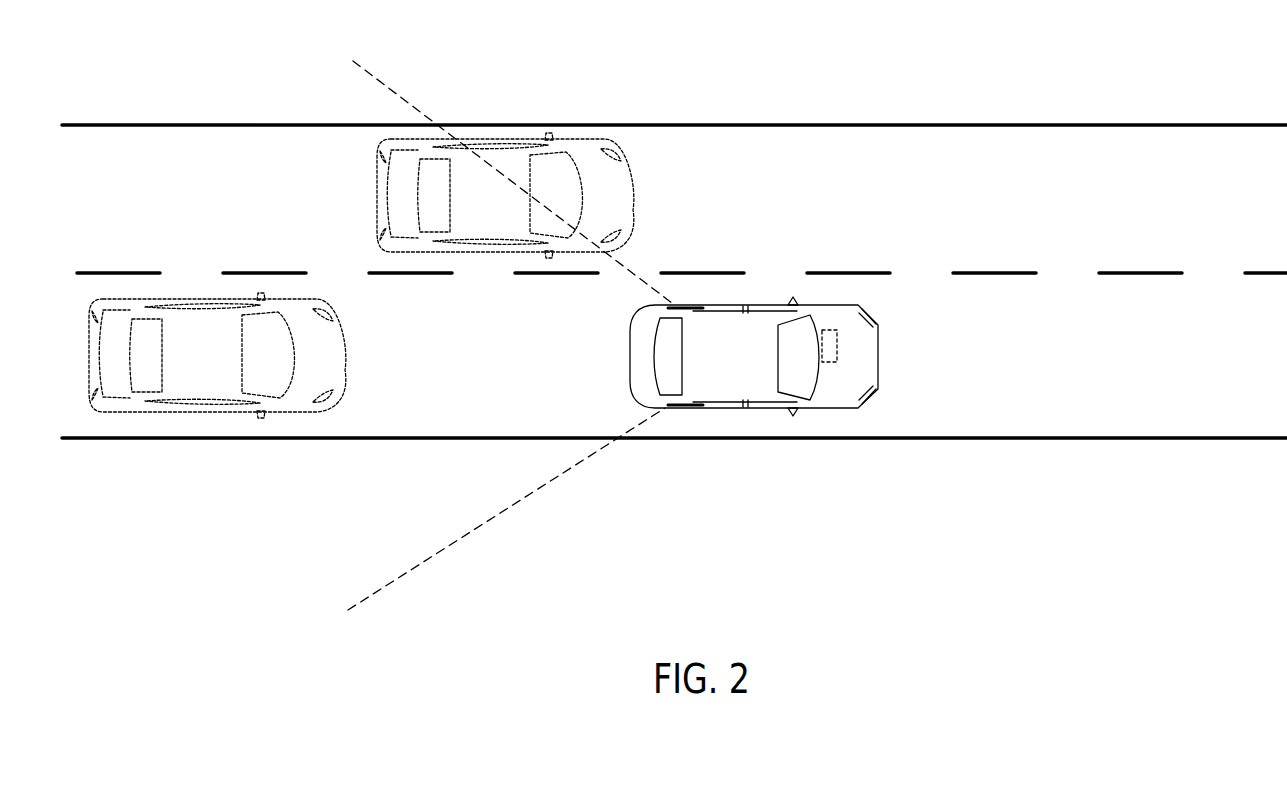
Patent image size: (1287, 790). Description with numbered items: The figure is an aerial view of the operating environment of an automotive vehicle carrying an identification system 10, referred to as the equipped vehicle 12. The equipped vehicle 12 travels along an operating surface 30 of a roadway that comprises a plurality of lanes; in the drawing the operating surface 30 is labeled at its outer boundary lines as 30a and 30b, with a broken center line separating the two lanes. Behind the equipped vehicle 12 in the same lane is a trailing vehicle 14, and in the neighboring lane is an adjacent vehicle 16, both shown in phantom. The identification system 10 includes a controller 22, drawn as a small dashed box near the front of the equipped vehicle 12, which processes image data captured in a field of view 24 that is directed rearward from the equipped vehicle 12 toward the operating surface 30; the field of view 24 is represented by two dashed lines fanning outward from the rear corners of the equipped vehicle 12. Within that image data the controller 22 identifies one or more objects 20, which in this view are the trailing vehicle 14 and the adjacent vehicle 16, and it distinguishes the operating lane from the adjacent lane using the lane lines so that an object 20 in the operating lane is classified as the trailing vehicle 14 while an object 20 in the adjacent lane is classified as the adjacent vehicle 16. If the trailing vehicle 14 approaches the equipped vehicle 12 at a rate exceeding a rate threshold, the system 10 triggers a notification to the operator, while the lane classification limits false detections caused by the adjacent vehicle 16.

The identification system 10 is at (802, 410).
The equipped vehicle 12 is at (754, 395).
The trailing vehicle 14 is at (172, 323).
The adjacent vehicle 16 is at (511, 164).
The objects 20 is at (361, 232).
The controller 22 is at (898, 367).
The field of view 24 is at (428, 558).
The operating surface 30 is at (674, 284).
The right lane marking 30a is at (1093, 410).
The left lane marking 30b is at (1069, 145).